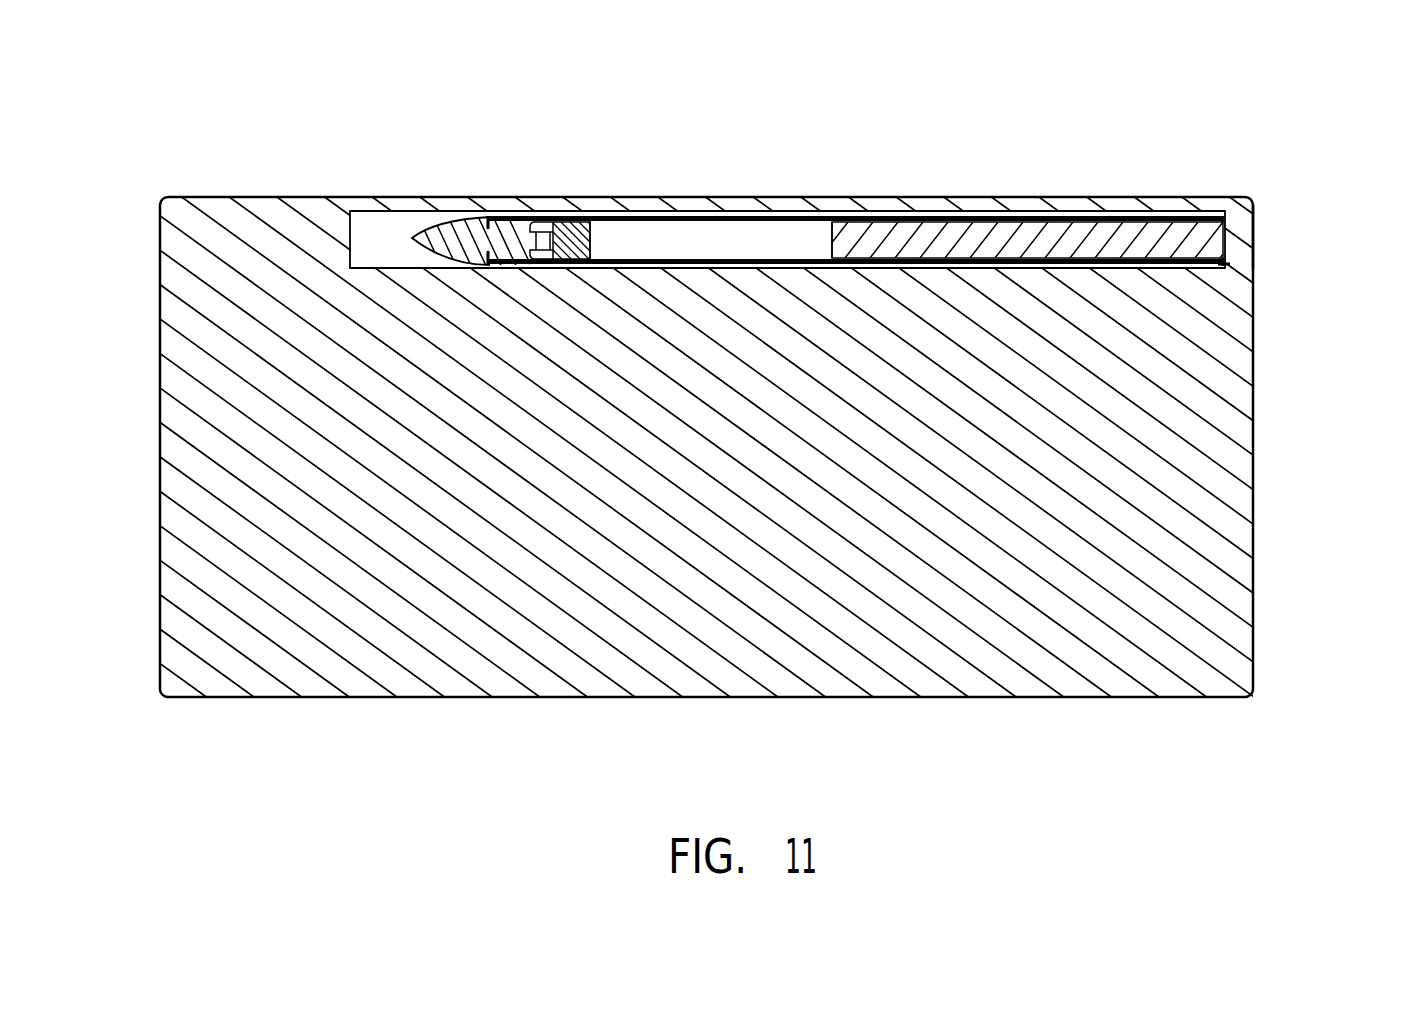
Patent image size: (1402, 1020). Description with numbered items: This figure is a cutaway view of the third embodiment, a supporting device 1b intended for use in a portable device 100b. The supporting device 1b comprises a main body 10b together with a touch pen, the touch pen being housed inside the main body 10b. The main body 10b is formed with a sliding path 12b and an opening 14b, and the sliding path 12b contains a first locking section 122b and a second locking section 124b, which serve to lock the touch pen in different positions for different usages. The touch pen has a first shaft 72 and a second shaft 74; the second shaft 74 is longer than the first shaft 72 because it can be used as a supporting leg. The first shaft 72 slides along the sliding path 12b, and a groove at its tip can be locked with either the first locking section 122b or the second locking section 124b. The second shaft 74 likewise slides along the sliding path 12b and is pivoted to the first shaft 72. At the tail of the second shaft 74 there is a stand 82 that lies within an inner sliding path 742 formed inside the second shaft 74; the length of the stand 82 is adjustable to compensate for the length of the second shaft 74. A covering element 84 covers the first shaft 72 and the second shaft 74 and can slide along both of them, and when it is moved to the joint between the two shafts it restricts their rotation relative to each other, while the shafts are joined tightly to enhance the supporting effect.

The electronic device 100b is at (97, 157).
The main body 10b is at (211, 208).
The supporting device 1b is at (380, 175).
The sliding path 12b is at (637, 211).
The first locking section 122b is at (481, 217).
The second locking section 124b is at (1220, 215).
The opening 14b is at (1273, 218).
The first shaft 72 is at (448, 237).
The second shaft 74 is at (727, 232).
The sliding path 742 is at (787, 218).
The stand 82 is at (1052, 238).
The covering element 84 is at (536, 222).